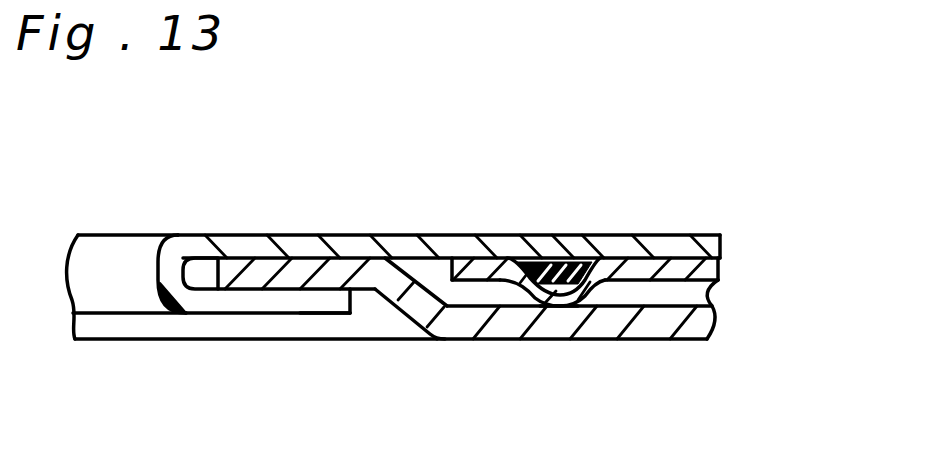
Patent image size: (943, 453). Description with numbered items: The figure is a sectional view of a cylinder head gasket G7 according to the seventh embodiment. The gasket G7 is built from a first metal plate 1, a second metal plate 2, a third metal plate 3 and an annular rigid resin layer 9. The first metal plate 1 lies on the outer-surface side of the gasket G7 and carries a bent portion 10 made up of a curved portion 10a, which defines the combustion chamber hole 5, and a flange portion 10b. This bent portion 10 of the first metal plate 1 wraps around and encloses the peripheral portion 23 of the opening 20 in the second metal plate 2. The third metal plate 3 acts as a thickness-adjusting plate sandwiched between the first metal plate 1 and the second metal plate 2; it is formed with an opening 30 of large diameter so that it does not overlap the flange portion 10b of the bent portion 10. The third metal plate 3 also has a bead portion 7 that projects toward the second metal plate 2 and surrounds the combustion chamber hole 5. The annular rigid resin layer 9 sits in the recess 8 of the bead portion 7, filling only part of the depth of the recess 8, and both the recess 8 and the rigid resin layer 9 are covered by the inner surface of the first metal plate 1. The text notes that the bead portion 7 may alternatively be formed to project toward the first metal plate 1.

The first metal plate 1 is at (577, 247).
The second metal plate 2 is at (690, 328).
The third metal plate 3 is at (700, 271).
The combustion chamber hole 5 is at (117, 255).
The bead portion 7 is at (559, 300).
The recess 8 is at (532, 260).
The rigid resin layer 9 is at (553, 260).
The bent portion 10 is at (222, 300).
The curved portion 10a is at (172, 277).
The flange portion 10b is at (303, 300).
The opening 20 is at (205, 262).
The peripheral portion 23 is at (270, 258).
The opening 30 is at (420, 268).
The cylinder head gasket G7 is at (692, 225).